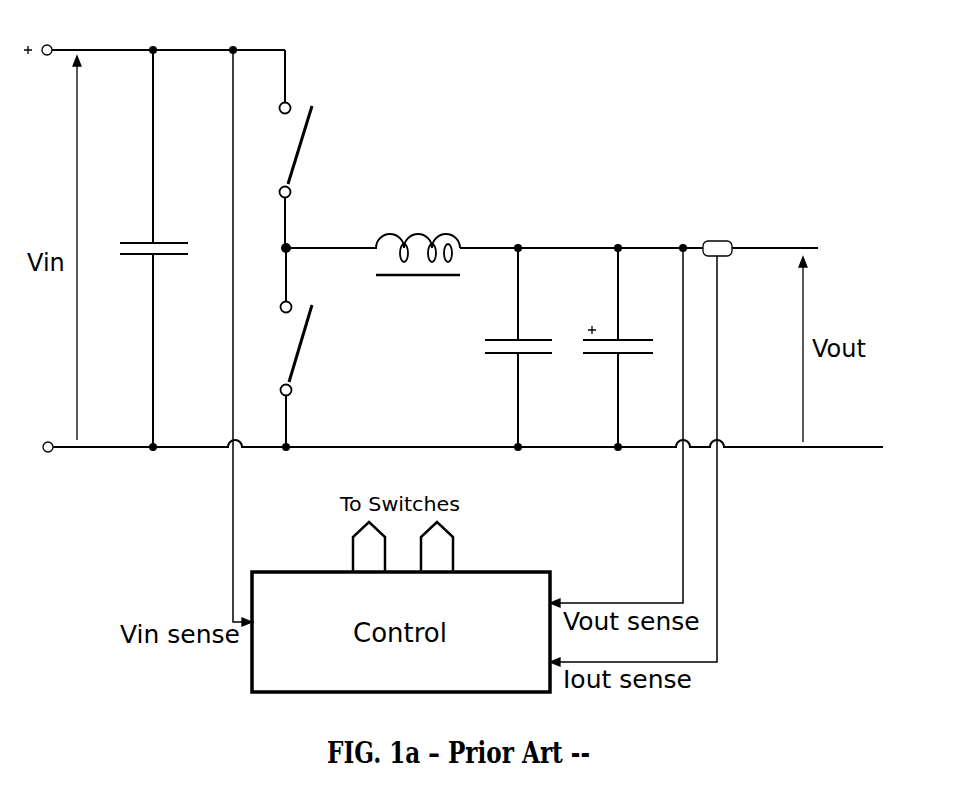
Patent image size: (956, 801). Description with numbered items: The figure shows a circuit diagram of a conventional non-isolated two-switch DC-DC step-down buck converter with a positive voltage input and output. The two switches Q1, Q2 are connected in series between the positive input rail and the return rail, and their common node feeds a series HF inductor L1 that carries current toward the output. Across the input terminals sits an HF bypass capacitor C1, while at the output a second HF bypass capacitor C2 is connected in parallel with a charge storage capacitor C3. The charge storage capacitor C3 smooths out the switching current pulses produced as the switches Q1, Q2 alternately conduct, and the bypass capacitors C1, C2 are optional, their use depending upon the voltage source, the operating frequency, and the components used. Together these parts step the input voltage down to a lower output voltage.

The HF bypass capacitor C1 is at (145, 248).
The switch Q1 is at (281, 149).
The switch Q2 is at (281, 347).
The series HF inductor L1 is at (410, 238).
The HF bypass capacitor C2 is at (512, 347).
The charge storage capacitor C3 is at (615, 347).